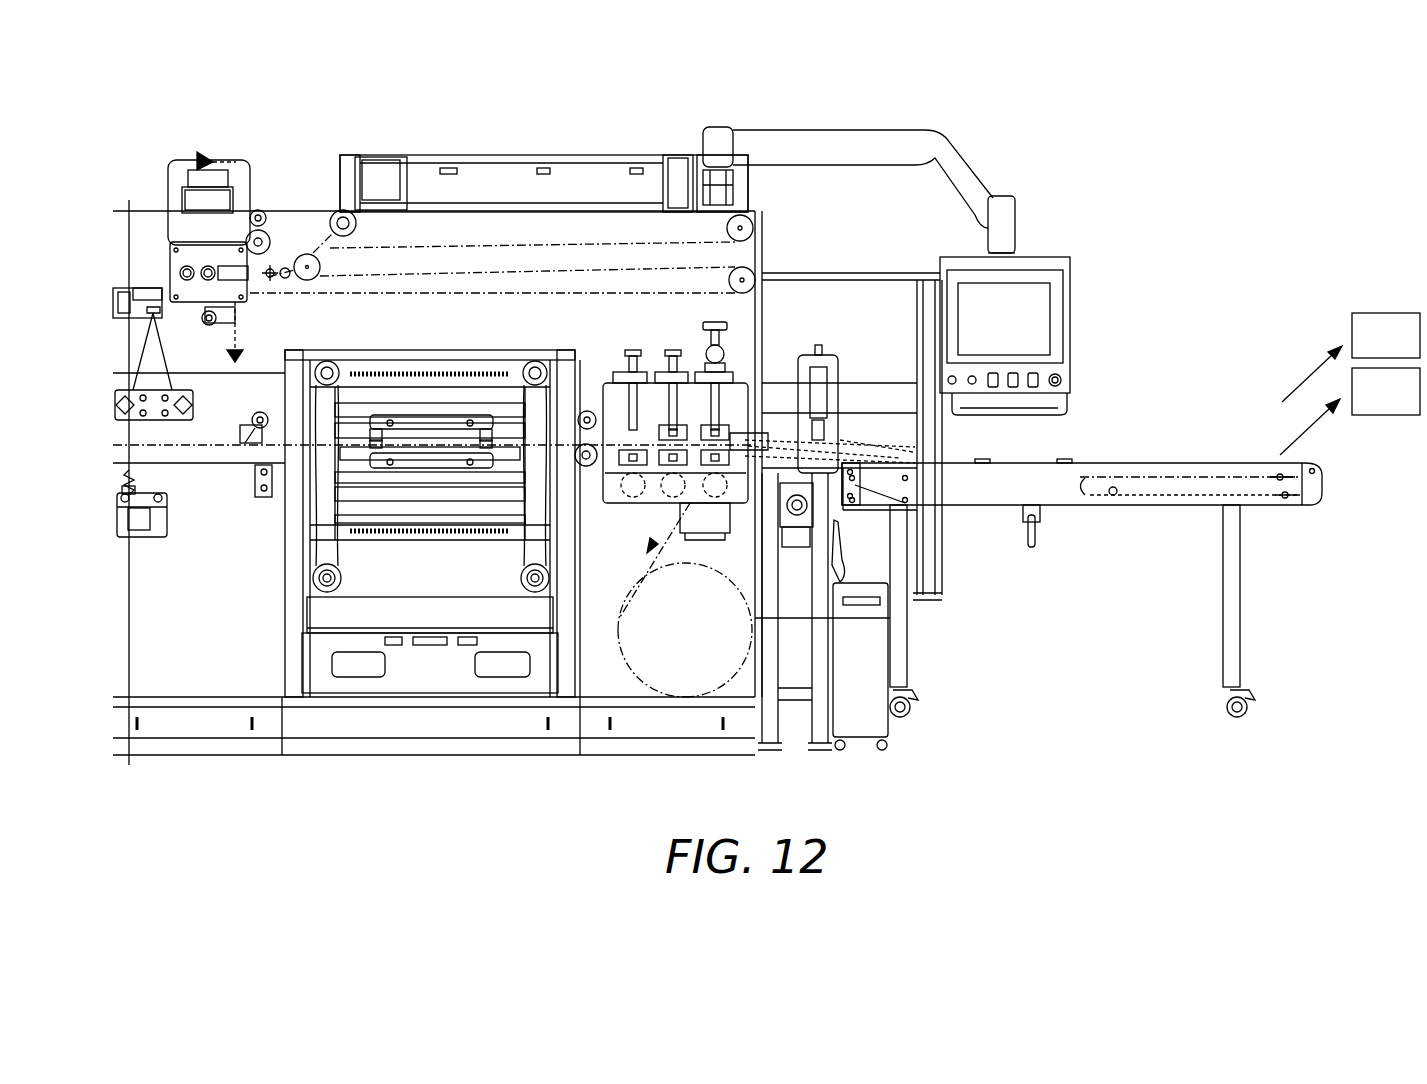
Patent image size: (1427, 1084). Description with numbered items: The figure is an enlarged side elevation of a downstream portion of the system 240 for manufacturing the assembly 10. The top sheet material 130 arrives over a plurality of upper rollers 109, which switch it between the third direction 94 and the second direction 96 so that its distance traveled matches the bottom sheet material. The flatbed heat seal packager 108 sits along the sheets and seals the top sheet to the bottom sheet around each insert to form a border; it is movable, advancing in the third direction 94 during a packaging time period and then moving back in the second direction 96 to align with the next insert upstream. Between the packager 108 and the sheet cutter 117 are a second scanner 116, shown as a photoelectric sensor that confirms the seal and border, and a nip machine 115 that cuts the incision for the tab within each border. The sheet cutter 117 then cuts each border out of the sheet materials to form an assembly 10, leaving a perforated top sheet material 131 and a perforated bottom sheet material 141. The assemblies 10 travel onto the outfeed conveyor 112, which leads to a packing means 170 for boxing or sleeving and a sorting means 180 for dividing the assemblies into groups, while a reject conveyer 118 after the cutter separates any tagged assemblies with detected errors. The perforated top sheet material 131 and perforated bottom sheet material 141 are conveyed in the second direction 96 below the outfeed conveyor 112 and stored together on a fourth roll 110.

The top sheet material 130 is at (450, 245).
The upper rollers 109 is at (752, 225).
The sheet cutter 117 is at (722, 325).
The system 240 is at (1055, 232).
The flatbed heat seal packager 108 is at (365, 352).
The second scanner 116 is at (592, 378).
The nip machine 115 is at (672, 365).
The fourth roll 110 is at (680, 635).
The perforated top sheet material 131 is at (640, 662).
The perforated bottom sheet material 141 is at (660, 692).
The reject conveyer 118 is at (790, 540).
The assembly 10 is at (983, 463).
The outfeed conveyor 112 is at (1147, 465).
The packing means 170 is at (1410, 349).
The sorting means 180 is at (1410, 403).
The second direction 96 is at (130, 841).
The third direction 94 is at (1348, 841).